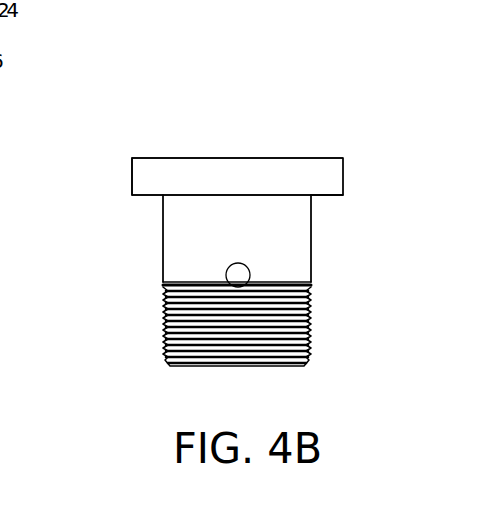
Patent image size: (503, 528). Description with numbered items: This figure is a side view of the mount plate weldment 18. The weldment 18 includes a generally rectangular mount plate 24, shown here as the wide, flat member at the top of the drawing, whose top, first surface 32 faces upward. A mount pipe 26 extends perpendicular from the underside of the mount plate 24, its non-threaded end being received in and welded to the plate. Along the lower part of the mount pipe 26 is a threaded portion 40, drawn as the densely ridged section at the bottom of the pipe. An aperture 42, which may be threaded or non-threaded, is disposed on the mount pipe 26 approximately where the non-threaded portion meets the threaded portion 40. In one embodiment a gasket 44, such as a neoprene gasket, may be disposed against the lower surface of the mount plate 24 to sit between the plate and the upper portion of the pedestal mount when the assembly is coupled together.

The mount plate weldment 18 is at (237, 101).
The top first surface 32 is at (305, 138).
The mount plate 24 is at (132, 170).
The gasket 44 is at (333, 195).
The mount pipe 26 is at (311, 268).
The aperture 42 is at (230, 266).
The threaded portion 40 is at (306, 330).